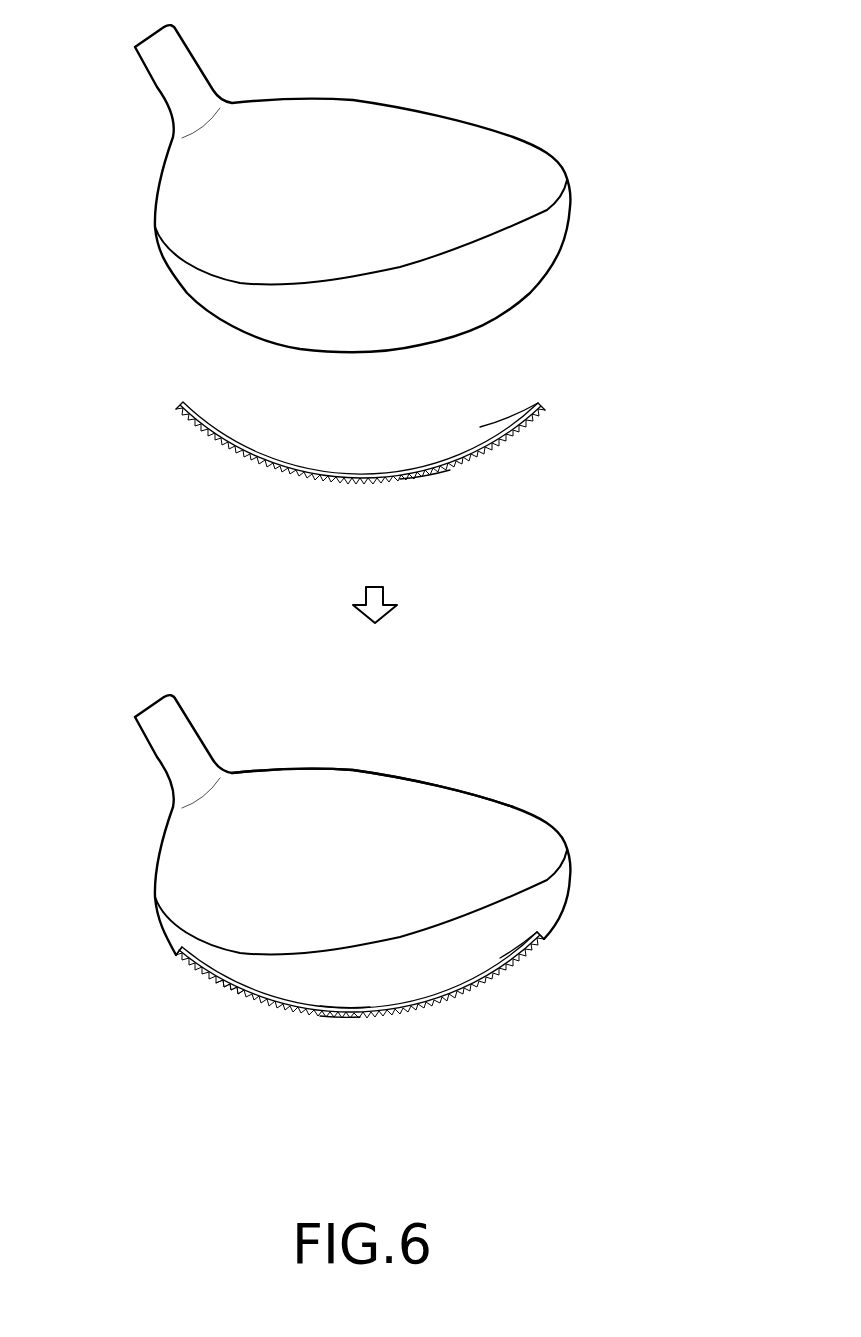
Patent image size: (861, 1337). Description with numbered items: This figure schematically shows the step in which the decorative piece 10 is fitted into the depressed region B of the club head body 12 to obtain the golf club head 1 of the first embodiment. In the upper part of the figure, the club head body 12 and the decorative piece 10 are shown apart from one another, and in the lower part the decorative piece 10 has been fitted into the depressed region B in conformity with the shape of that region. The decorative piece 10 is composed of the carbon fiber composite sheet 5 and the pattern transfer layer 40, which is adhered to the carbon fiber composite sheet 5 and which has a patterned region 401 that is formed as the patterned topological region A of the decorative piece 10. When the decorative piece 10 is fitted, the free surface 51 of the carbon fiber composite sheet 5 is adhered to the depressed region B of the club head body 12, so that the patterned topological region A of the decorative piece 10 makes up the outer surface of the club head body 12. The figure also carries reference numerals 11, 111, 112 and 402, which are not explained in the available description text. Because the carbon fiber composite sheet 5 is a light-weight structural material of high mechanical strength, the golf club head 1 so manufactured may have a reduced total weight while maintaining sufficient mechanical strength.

The golf club head 1 is at (428, 770).
The decorative piece 10 is at (575, 401).
The groove 11 is at (515, 930).
The groove bottom surface 111 is at (340, 1017).
The groove side surface 112 is at (347, 1008).
The club head body 12 is at (503, 153).
The pattern transfer layer 40 is at (190, 456).
The patterned region 401 is at (237, 997).
The end of insert 402 is at (184, 949).
The carbon fiber composite sheet 5 is at (504, 412).
The free surface 51 is at (427, 463).
The patterned topological region A is at (480, 997).
The depressed region B is at (540, 933).